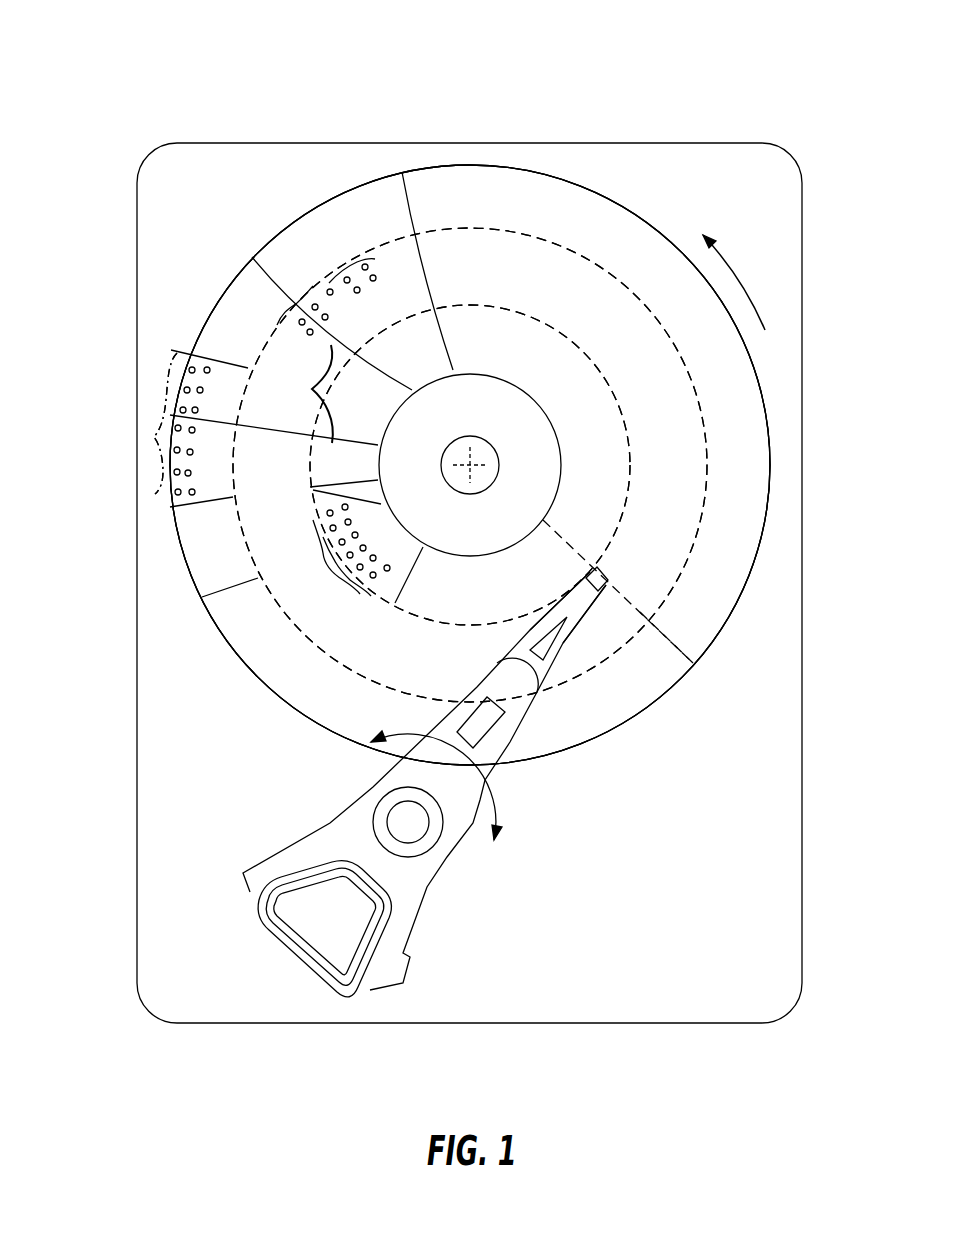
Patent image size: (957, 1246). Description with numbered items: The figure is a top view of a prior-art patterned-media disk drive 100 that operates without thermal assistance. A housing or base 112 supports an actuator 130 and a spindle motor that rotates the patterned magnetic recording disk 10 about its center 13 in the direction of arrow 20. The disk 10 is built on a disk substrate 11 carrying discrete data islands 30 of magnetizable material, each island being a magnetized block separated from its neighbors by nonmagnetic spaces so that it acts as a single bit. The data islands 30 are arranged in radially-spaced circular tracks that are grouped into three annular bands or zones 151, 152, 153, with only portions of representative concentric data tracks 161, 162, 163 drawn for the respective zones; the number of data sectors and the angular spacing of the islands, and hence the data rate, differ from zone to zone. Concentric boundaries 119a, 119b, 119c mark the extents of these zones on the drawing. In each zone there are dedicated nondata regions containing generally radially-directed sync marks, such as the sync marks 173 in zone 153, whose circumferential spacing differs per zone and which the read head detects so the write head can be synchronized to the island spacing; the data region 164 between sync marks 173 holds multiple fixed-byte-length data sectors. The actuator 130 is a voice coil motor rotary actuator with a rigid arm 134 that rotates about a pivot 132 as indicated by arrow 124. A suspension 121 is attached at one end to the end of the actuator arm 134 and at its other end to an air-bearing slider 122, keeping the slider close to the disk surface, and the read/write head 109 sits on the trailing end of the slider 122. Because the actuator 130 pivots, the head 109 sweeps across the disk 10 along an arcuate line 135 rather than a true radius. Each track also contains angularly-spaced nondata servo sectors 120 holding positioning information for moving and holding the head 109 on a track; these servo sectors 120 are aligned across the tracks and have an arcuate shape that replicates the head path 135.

The patterned-media disk drive 100 is at (140, 58).
The housing or base 112 is at (721, 143).
The patterned magnetic recording disk 10 is at (328, 230).
The disk substrate 11 is at (760, 370).
The center of disk 13 is at (470, 457).
The arrow indicating disk rotation direction 20 is at (733, 263).
The data islands 30 is at (340, 305).
The read/write head 109 is at (600, 573).
The first zone boundary 119a is at (495, 308).
The second zone boundary 119b is at (520, 245).
The third zone boundary 119c is at (616, 205).
The servo sectors 120 is at (412, 211).
The suspension 121 is at (520, 660).
The air-bearing slider 122 is at (602, 585).
The arrow indicating actuator rotation 124 is at (497, 800).
The actuator 130 is at (236, 871).
The pivot 132 is at (400, 817).
The actuator arm 134 is at (475, 693).
The arcuate line (head path) 135 is at (675, 645).
The zone 151 is at (610, 425).
The zone 152 is at (683, 447).
The zone 153 is at (753, 462).
The data track 161 is at (327, 559).
The data track 162 is at (322, 280).
The data track 163 is at (152, 432).
The data region 164 is at (192, 348).
The sync marks 173 is at (198, 380).